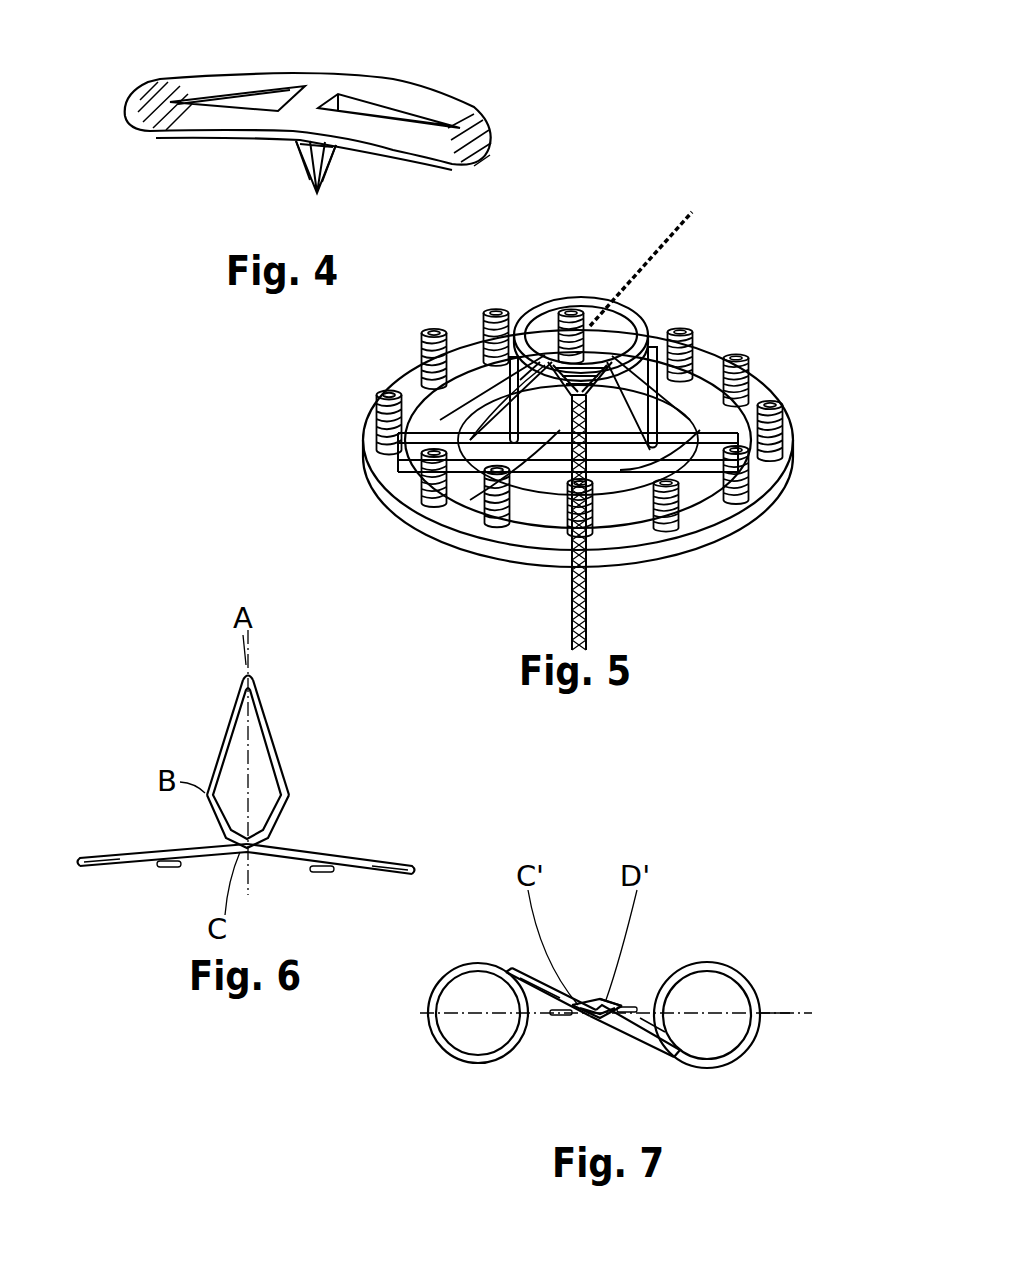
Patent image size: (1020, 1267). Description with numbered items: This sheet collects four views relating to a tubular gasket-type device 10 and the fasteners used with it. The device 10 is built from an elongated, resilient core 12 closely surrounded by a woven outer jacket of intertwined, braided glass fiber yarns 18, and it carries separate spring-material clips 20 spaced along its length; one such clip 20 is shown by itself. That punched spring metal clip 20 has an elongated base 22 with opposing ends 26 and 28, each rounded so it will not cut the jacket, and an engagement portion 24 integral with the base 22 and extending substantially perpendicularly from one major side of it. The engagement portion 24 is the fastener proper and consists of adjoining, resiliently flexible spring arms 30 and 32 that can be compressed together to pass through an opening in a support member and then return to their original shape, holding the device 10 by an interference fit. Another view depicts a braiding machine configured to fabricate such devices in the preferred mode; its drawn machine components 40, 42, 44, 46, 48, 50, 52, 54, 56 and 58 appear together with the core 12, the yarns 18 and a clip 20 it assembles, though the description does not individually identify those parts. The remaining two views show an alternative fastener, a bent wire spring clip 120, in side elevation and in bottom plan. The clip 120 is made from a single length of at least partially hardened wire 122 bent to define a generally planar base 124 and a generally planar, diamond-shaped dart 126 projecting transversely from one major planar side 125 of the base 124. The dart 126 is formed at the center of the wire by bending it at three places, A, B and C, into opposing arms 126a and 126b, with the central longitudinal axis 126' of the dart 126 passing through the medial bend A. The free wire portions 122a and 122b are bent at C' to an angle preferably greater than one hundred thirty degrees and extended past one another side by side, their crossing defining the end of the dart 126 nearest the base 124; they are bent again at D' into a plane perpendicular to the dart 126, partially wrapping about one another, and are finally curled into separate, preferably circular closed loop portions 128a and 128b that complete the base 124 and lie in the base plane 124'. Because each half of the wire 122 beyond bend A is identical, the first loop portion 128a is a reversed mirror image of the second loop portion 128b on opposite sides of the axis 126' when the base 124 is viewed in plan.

In FIG. 5, the tubular gasket-type device 10 is at (568, 601).
In FIG. 5, the core 12 is at (650, 262).
In FIG. 5, the glass fiber yarns 18 is at (468, 420).
In FIG. 4, the clip 20 is at (417, 84).
In FIG. 5, the clip 20 is at (680, 248).
In FIG. 4, the base 22 is at (160, 96).
In FIG. 4, the engagement portion 24 is at (288, 157).
In FIG. 4, the end 26 is at (126, 116).
In FIG. 4, the end 28 is at (490, 142).
In FIG. 4, the spring arm 30 is at (307, 187).
In FIG. 4, the spring arm 32 is at (322, 188).
In FIG. 5, the base plate 40 is at (762, 383).
In FIG. 5, the cross bar 42 is at (772, 497).
In FIG. 5, the radial rib 44 is at (773, 406).
In FIG. 5, the coil springs 46 is at (433, 330).
In FIG. 5, the bracket 48 is at (583, 483).
In FIG. 5, the central ring 50 is at (585, 297).
In FIG. 5, the support post 52 is at (790, 452).
In FIG. 5, the pin 54 is at (398, 426).
In FIG. 5, the bracket 56 is at (520, 500).
In FIG. 5, the funnel 58 is at (594, 400).
In FIG. 6, the bent wire spring clip 120 is at (222, 697).
In FIG. 7, the bent wire spring clip 120 is at (700, 955).
In FIG. 6, the wire 122 is at (188, 846).
In FIG. 6, the first leg 122a is at (335, 880).
In FIG. 7, the first leg 122a is at (682, 1055).
In FIG. 6, the second leg 122b is at (165, 870).
In FIG. 7, the second leg 122b is at (512, 972).
In FIG. 6, the base 124 is at (205, 861).
In FIG. 7, the base 124 is at (701, 1015).
In FIG. 7, the base plane 124' is at (784, 957).
In FIG. 6, the major planar side 125 is at (355, 858).
In FIG. 6, the dart 126 is at (335, 769).
In FIG. 6, the arm 126a is at (222, 737).
In FIG. 7, the arm 126a is at (595, 1003).
In FIG. 6, the arm 126b is at (273, 745).
In FIG. 7, the arm 126b is at (597, 1022).
In FIG. 6, the central longitudinal axis 126' is at (306, 685).
In FIG. 7, the central longitudinal axis 126' is at (652, 954).
In FIG. 7, the loop portion 128a is at (668, 1050).
In FIG. 7, the loop portion 128b is at (515, 1052).